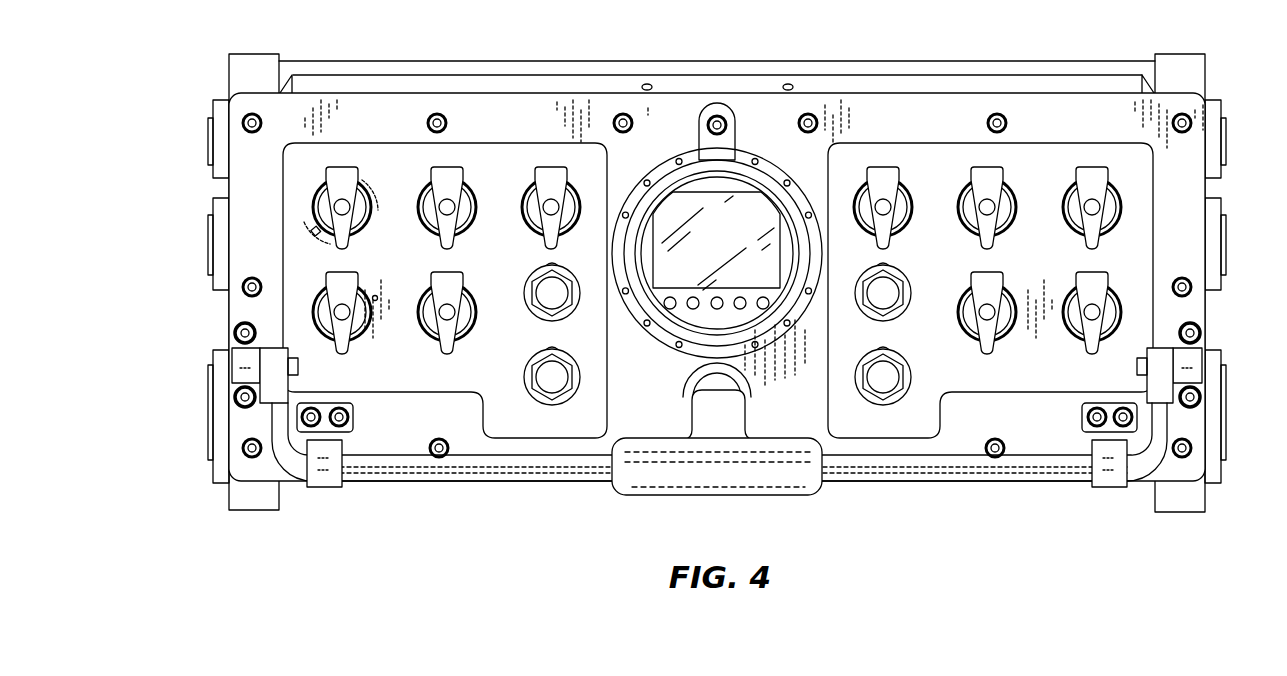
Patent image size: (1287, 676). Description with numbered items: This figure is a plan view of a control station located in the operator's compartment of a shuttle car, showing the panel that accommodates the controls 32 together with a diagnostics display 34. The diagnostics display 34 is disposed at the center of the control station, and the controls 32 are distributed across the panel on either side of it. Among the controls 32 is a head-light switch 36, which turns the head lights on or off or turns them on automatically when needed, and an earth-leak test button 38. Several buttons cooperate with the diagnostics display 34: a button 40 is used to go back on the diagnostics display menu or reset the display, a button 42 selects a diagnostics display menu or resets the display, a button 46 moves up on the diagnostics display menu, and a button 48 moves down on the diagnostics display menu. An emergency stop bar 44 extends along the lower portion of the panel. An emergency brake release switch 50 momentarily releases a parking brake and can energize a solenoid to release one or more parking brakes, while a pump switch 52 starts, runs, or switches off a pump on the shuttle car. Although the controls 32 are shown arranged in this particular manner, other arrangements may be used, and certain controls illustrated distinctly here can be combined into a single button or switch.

The controls 32 is at (1087, 515).
The diagnostics display 34 is at (750, 222).
The head-light switch 36 is at (1095, 178).
The earth-leak test button 38 is at (337, 285).
The button 40 is at (578, 314).
The button 42 is at (524, 378).
The emergency stop bar 44 is at (527, 473).
The button 46 is at (902, 318).
The button 48 is at (867, 398).
The emergency brake release switch 50 is at (985, 352).
The pump switch 52 is at (1095, 288).